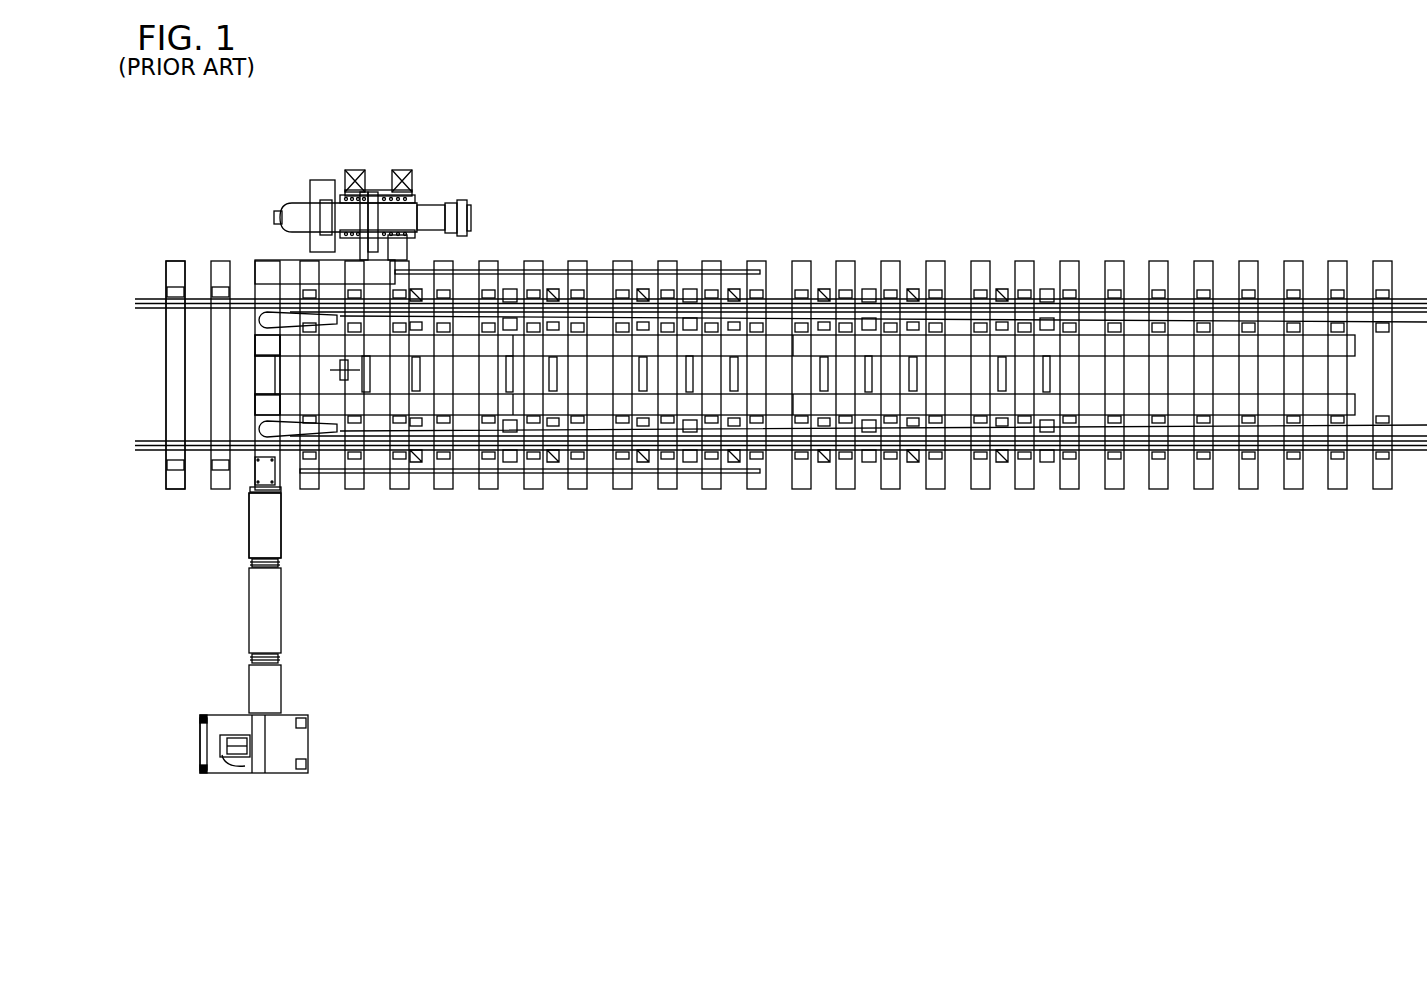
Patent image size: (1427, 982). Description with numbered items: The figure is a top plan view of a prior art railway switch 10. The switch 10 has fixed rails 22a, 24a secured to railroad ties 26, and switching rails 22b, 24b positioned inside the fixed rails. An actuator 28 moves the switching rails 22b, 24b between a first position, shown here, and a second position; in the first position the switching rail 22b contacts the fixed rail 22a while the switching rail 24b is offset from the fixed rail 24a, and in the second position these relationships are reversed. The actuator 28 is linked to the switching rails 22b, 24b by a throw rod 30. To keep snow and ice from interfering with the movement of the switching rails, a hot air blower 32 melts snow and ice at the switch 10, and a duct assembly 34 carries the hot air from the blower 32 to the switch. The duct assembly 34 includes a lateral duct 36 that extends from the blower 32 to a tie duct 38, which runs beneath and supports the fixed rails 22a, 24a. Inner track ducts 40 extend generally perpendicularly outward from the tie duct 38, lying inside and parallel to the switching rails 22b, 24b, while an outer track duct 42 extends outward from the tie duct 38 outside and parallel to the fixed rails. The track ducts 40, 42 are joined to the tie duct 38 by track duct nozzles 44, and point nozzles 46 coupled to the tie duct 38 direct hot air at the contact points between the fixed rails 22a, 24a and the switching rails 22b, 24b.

The railway switch 10 is at (768, 157).
The fixed rail 22a is at (200, 302).
The switching rail 22b is at (1074, 305).
The fixed rail 24a is at (157, 450).
The switching rail 24b is at (1156, 427).
The railroad tie 26 is at (174, 482).
The actuator 28 is at (410, 196).
The throw rod 30 is at (347, 363).
The hot air blower 32 is at (308, 741).
The duct assembly 34 is at (288, 554).
The lateral duct 36 is at (283, 617).
The tie duct 38 is at (260, 378).
The inner track duct 40 is at (1210, 347).
The outer track duct 42 is at (306, 270).
The track duct nozzle 44 is at (273, 268).
The point nozzle 46 is at (277, 320).